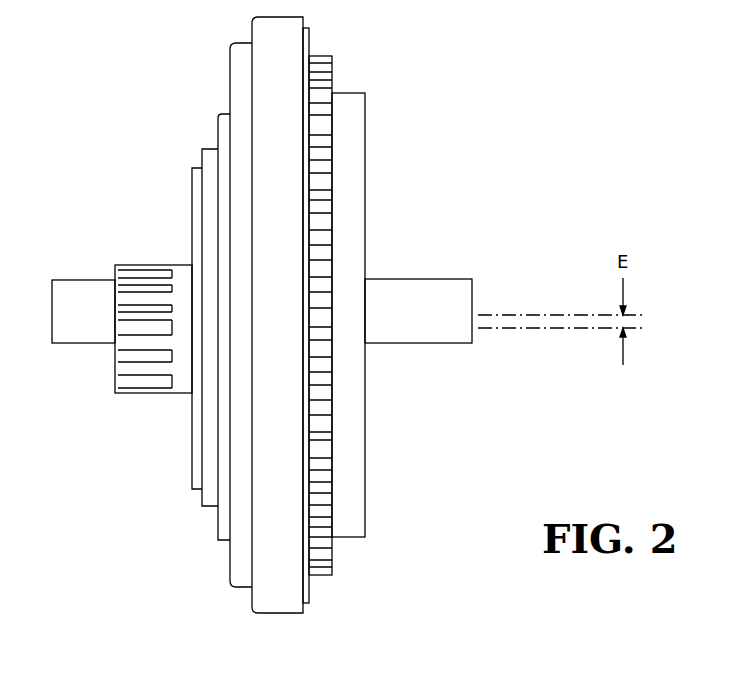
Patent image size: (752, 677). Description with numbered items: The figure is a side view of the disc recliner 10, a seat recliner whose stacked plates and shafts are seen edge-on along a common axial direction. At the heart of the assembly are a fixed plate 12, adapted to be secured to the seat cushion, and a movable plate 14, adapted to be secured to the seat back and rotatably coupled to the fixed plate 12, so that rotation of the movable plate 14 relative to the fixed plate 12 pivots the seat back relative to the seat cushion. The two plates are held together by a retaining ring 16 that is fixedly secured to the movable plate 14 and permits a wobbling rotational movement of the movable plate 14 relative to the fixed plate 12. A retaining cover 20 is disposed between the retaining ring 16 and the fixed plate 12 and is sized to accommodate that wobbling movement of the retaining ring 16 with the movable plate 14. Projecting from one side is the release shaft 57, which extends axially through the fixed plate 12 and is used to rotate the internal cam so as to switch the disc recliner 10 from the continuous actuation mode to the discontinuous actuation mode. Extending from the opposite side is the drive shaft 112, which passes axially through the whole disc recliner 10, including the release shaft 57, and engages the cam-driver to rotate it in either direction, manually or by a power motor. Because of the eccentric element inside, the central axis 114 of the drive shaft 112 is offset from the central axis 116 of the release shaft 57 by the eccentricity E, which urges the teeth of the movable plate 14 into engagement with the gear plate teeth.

The disc recliner 10 is at (436, 173).
The fixed plate 12 is at (192, 470).
The movable plate 14 is at (355, 453).
The retaining ring 16 is at (292, 79).
The retaining cover 20 is at (220, 522).
The release shaft 57 is at (147, 265).
The drive shaft 112 is at (410, 333).
The central axis of the drive shaft 114 is at (520, 315).
The central axis of the release shaft 116 is at (545, 328).